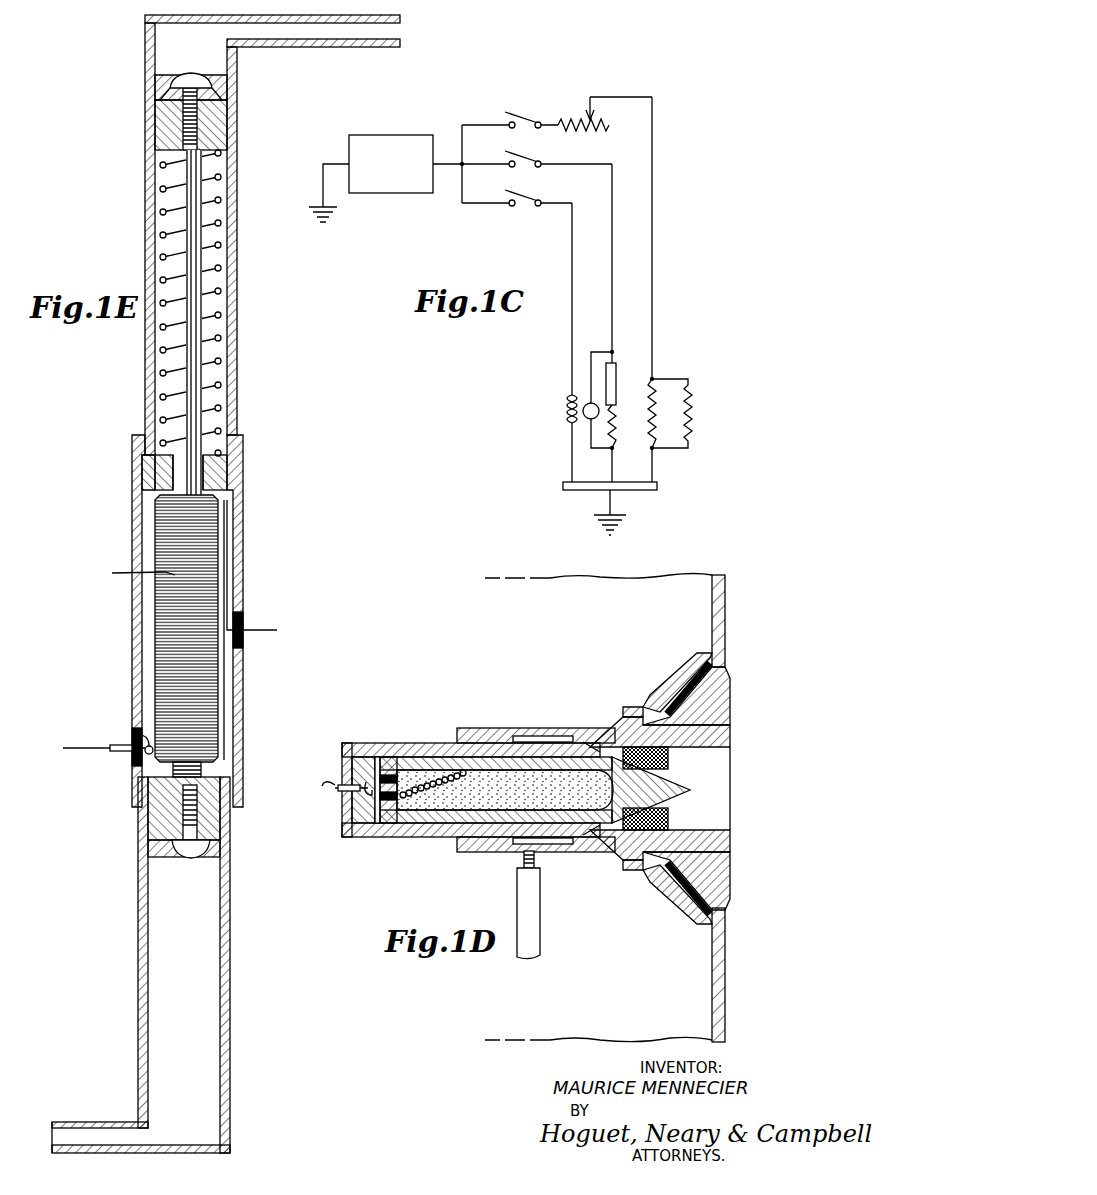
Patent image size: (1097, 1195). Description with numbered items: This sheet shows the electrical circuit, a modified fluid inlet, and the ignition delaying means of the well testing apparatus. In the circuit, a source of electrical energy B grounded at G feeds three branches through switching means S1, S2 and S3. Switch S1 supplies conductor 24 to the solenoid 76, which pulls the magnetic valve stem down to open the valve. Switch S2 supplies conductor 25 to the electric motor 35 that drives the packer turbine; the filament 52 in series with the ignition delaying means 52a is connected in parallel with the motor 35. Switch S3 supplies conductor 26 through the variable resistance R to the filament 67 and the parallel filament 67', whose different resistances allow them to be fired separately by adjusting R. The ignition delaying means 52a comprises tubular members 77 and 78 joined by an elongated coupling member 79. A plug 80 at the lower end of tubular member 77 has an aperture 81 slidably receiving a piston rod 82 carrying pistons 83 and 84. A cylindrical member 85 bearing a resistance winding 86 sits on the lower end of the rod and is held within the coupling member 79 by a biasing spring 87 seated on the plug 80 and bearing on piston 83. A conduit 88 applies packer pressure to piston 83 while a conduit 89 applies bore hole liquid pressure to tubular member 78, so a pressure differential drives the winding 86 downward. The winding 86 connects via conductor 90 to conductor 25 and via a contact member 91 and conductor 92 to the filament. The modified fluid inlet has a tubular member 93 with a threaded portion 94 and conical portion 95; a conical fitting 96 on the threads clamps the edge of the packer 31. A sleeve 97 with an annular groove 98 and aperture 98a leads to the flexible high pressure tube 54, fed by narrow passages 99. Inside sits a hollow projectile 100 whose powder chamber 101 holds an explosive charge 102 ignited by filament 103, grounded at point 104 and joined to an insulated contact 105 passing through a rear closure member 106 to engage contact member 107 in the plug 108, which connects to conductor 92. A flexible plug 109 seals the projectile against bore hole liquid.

In FIG. 1E, the conduit 88 is at (285, 40).
In FIG. 1E, the piston 83 is at (150, 125).
In FIG. 1E, the tubular member 77 is at (237, 322).
In FIG. 1E, the biasing spring 87 is at (212, 350).
In FIG. 1E, the piston rod 82 is at (194, 375).
In FIG. 1E, the aperture 81 is at (148, 470).
In FIG. 1E, the plug 80 is at (228, 472).
In FIG. 1E, the cylindrical member 85 is at (160, 548).
In FIG. 1E, the resistance winding 86 is at (131, 573).
In FIG. 1E, the coupling member 79 is at (238, 556).
In FIG. 1E, the conductor 90 is at (232, 583).
In FIG. 1C, the conductor 90 is at (614, 360).
In FIG. 1E, the ignition delaying means 52a is at (100, 666).
In FIG. 1C, the ignition delaying means 52a is at (616, 375).
In FIG. 1E, the contact member 91 is at (142, 735).
In FIG. 1E, the conductor 92 is at (95, 752).
In FIG. 1C, the conductor 92 is at (614, 415).
In FIG. 1D, the conductor 92 is at (330, 790).
In FIG. 1E, the piston 84 is at (150, 815).
In FIG. 1E, the tubular member 78 is at (230, 962).
In FIG. 1E, the conduit 89 is at (83, 1135).
In FIG. 1C, the source of electrical energy B is at (383, 130).
In FIG. 1C, the ground G is at (337, 215).
In FIG. 1C, the switching means S1 is at (520, 208).
In FIG. 1C, the switching means S2 is at (522, 178).
In FIG. 1C, the switching means S3 is at (515, 115).
In FIG. 1C, the variable resistance R is at (585, 130).
In FIG. 1C, the conductor 24 is at (571, 333).
In FIG. 1C, the conductor 25 is at (611, 292).
In FIG. 1C, the conductor 26 is at (653, 279).
In FIG. 1C, the solenoid 76 is at (562, 409).
In FIG. 1C, the electric motor 35 is at (585, 417).
In FIG. 1C, the filament 52 is at (616, 432).
In FIG. 1C, the filament 67 is at (680, 431).
In FIG. 1C, the filament 67' is at (698, 413).
In FIG. 1D, the packer 31 is at (725, 610).
In FIG. 1D, the tubular member 93 is at (437, 743).
In FIG. 1D, the igniting filament 103 is at (418, 812).
In FIG. 1D, the explosive charge 102 is at (492, 800).
In FIG. 1D, the powder chamber 101 is at (445, 822).
In FIG. 1D, the plug 108 is at (362, 765).
In FIG. 1D, the insulated contact 105 is at (378, 770).
In FIG. 1D, the insulated contact member 107 is at (370, 790).
In FIG. 1D, the rear closure member 106 is at (378, 812).
In FIG. 1D, the grounding point 104 is at (465, 775).
In FIG. 1D, the sleeve 97 is at (482, 735).
In FIG. 1D, the annular groove 98 is at (535, 735).
In FIG. 1D, the aperture 98a is at (536, 856).
In FIG. 1D, the flexible high pressure tube 54 is at (540, 895).
In FIG. 1D, the narrow passages 99 is at (583, 742).
In FIG. 1D, the threaded portion 94 is at (660, 738).
In FIG. 1D, the conical portion 95 is at (715, 700).
In FIG. 1D, the conical fitting 96 is at (665, 692).
In FIG. 1D, the flexible plug 109 is at (668, 764).
In FIG. 1D, the hollow projectile 100 is at (645, 785).